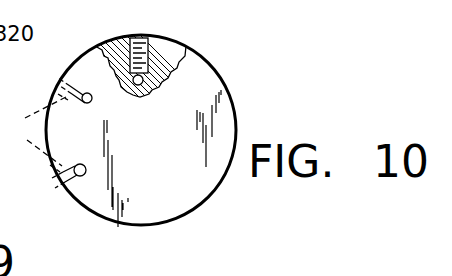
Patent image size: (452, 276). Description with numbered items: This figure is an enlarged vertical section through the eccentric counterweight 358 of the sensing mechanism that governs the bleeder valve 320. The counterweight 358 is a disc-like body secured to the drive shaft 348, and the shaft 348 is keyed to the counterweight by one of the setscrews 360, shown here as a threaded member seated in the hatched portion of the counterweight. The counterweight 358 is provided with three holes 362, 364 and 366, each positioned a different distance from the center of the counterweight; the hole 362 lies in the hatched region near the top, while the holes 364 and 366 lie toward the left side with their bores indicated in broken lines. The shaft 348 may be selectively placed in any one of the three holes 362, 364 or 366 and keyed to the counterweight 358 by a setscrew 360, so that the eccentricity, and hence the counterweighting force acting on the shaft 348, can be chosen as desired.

The bleeder valve 320 is at (17, 34).
The drive shaft 348 is at (146, 77).
The eccentric counterweight 358 is at (223, 123).
The setscrews 360 is at (147, 72).
The hole 362 is at (148, 82).
The hole 364 is at (68, 86).
The hole 366 is at (72, 172).